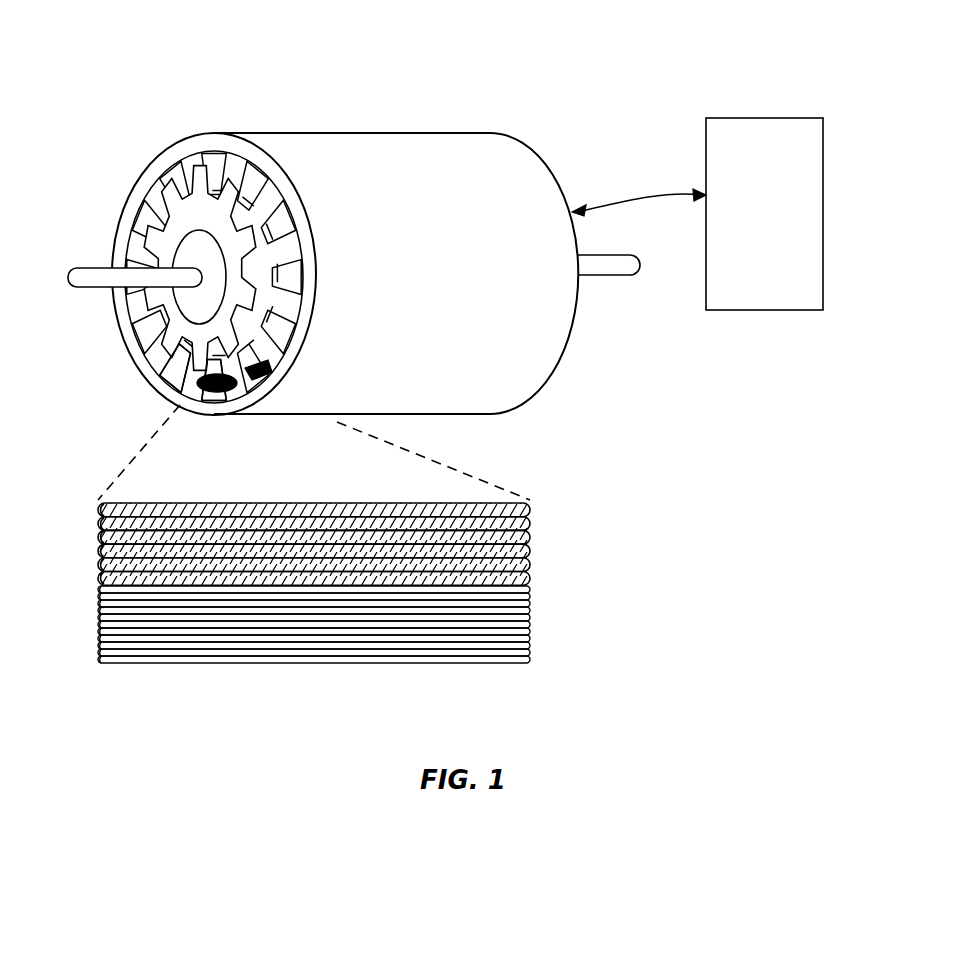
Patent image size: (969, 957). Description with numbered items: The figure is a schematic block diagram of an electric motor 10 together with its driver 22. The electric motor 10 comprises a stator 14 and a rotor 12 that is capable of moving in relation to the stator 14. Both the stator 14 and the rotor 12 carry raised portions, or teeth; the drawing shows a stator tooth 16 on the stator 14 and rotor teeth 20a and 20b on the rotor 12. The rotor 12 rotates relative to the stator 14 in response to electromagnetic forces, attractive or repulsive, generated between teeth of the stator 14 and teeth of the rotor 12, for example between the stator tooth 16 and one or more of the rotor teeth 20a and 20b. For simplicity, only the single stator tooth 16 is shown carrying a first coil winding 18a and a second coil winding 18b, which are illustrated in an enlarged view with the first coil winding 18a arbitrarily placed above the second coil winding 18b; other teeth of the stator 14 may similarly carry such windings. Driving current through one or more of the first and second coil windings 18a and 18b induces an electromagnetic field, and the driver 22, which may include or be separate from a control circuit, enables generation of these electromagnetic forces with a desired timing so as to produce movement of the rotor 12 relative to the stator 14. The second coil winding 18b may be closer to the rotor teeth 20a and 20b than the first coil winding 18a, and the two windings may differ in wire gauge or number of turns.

The electric motor 10 is at (540, 71).
The rotor 12 is at (190, 223).
The stator 14 is at (323, 152).
The stator tooth 16 is at (488, 498).
The first coil winding 18a is at (533, 502).
The second coil winding 18b is at (533, 587).
The rotor tooth 20a is at (187, 350).
The rotor tooth 20b is at (210, 356).
The driver 22 is at (770, 118).